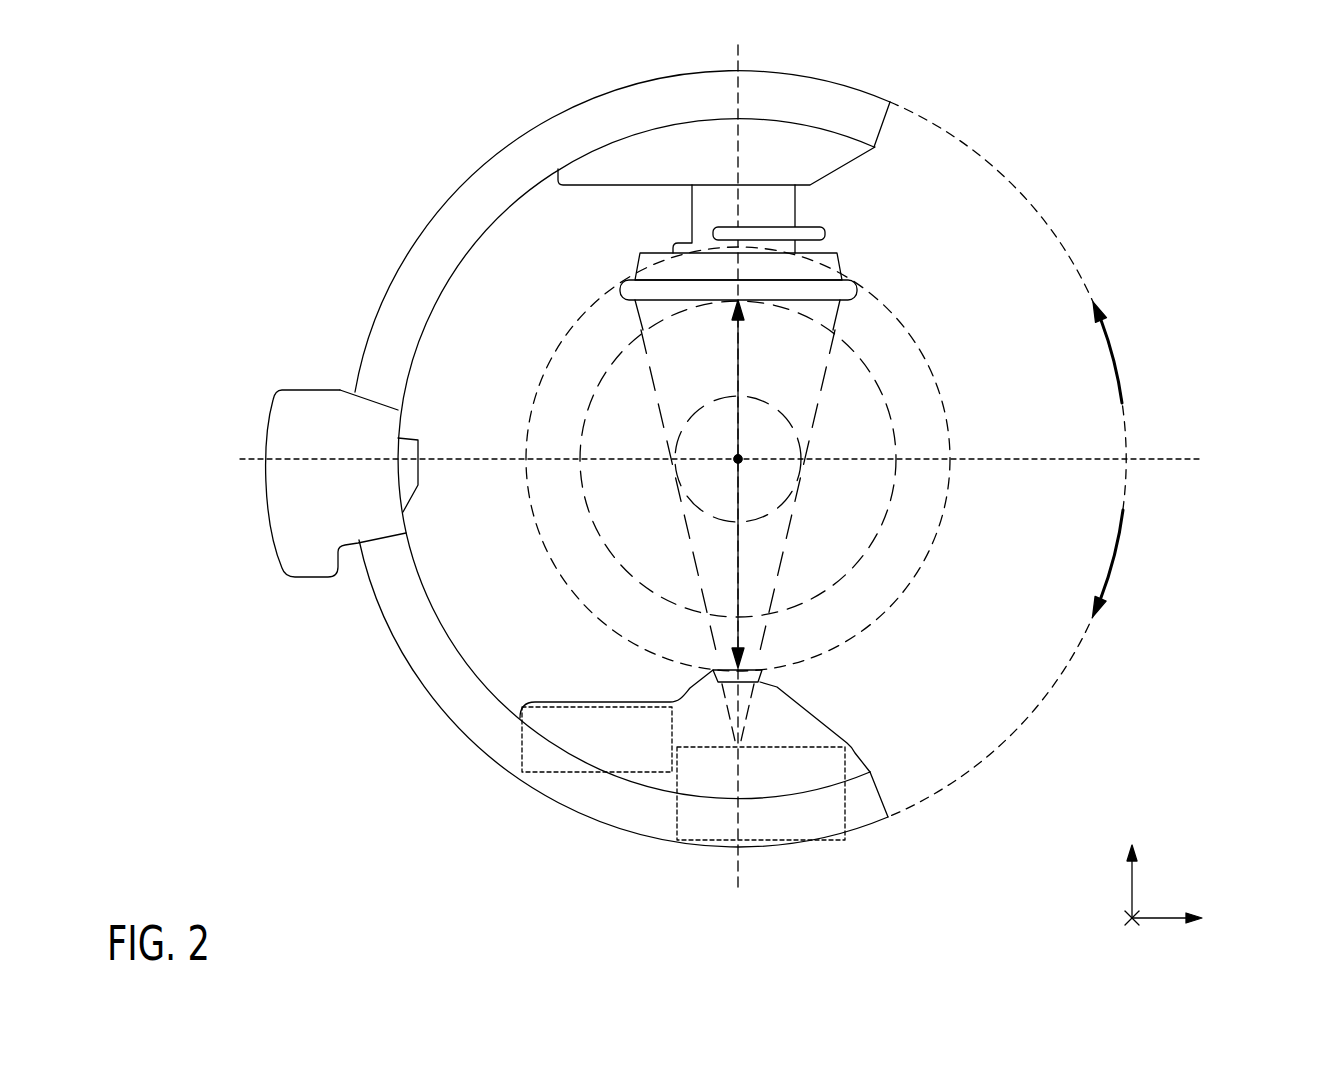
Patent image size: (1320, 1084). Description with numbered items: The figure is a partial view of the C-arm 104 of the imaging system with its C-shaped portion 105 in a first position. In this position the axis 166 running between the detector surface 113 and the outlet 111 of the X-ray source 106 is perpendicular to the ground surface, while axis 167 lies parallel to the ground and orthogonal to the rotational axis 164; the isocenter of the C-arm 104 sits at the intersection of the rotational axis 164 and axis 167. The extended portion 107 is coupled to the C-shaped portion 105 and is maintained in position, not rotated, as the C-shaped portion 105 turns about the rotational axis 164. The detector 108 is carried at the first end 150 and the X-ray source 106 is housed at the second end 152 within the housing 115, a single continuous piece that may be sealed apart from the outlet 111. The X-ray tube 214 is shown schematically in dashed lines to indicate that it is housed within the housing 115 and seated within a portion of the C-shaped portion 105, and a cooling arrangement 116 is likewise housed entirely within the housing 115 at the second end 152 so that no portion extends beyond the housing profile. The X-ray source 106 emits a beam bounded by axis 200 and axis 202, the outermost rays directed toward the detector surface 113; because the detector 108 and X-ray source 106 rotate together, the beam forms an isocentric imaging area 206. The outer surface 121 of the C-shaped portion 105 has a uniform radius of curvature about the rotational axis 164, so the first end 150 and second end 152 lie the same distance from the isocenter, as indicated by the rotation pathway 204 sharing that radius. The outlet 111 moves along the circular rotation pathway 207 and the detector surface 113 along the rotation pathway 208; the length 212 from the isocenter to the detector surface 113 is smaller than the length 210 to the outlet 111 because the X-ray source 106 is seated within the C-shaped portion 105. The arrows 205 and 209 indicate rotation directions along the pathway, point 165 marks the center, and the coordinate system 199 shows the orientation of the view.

The C-arm 104 is at (685, 445).
The C-shaped portion 105 is at (763, 92).
The X-ray source 106 is at (737, 736).
The extended portion 107 is at (307, 440).
The detector 108 is at (805, 272).
The outlet 111 is at (748, 670).
The detector surface 113 is at (810, 302).
The housing 115 is at (840, 738).
The cooling arrangement 116 is at (584, 742).
The outer surface 121 is at (472, 175).
The first end 150 is at (888, 107).
The second end 152 is at (883, 812).
The rotational axis 164 is at (740, 457).
The axis of rotation 165 is at (736, 462).
The axis 166 is at (737, 872).
The axis 167 is at (1172, 459).
The coordinate system 199 is at (1202, 863).
The axis 200 is at (689, 542).
The axis 202 is at (786, 542).
The rotation pathway 204 is at (940, 796).
The first rotation direction 205 is at (1110, 342).
The isocentric imaging area 206 is at (753, 393).
The rotation pathway 207 is at (940, 397).
The rotation pathway 208 is at (865, 367).
The second rotation direction 209 is at (1115, 556).
The length 210 is at (740, 578).
The length 212 is at (737, 330).
The X-ray tube 214 is at (762, 747).